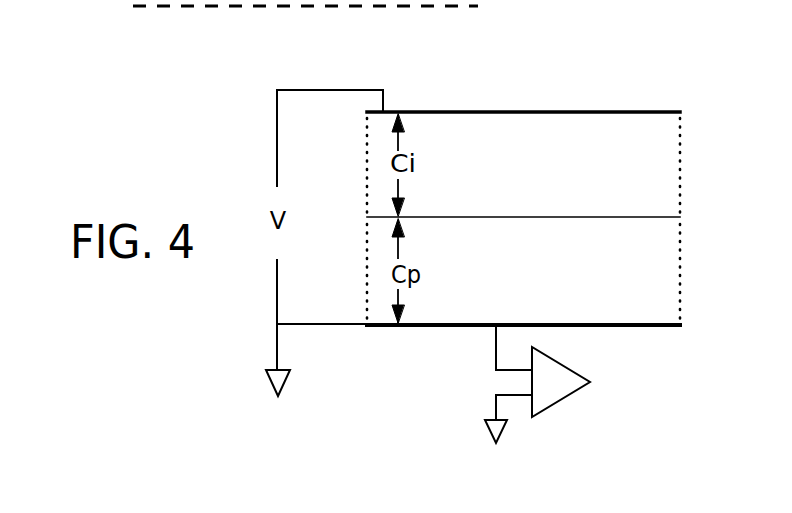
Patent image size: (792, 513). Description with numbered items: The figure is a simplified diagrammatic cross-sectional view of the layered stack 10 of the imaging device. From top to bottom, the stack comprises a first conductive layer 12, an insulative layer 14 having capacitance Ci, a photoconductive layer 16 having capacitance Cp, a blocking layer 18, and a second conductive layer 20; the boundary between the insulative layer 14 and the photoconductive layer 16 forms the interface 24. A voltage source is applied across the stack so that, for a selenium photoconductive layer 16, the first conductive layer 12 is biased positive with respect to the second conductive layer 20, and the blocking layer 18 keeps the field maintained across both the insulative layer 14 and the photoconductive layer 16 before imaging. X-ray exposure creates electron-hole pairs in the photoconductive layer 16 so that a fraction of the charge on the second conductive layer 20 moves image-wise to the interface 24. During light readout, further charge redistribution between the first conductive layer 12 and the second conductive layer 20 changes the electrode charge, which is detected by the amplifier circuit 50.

The layered stack 10 is at (690, 76).
The first conductive layer 12 is at (458, 111).
The insulative layer 14 is at (681, 143).
The interface 24 is at (680, 217).
The photoconductive layer 16 is at (681, 280).
The blocking layer 18 is at (631, 318).
The second conductive layer 20 is at (447, 328).
The amplifier circuit 50 is at (558, 402).